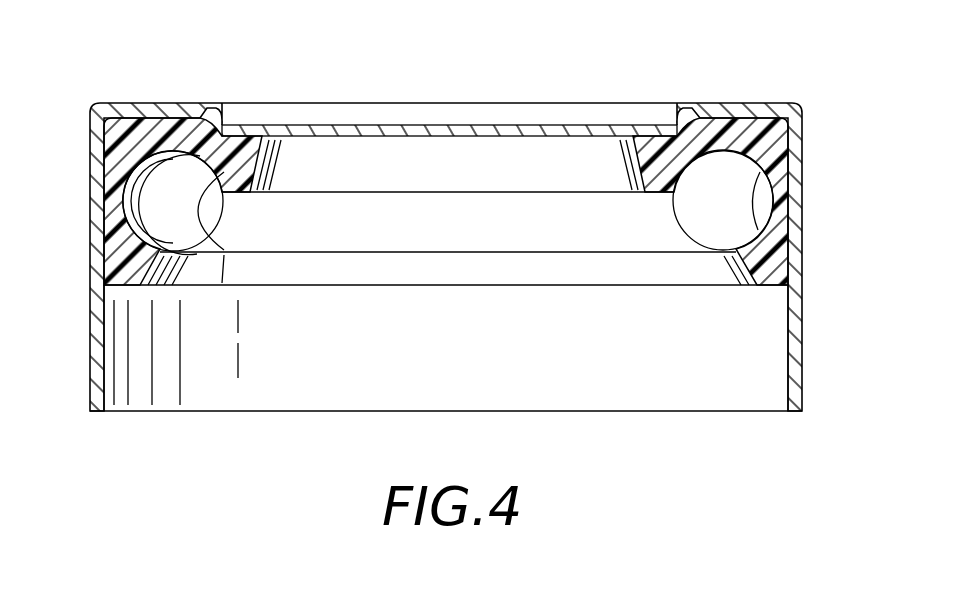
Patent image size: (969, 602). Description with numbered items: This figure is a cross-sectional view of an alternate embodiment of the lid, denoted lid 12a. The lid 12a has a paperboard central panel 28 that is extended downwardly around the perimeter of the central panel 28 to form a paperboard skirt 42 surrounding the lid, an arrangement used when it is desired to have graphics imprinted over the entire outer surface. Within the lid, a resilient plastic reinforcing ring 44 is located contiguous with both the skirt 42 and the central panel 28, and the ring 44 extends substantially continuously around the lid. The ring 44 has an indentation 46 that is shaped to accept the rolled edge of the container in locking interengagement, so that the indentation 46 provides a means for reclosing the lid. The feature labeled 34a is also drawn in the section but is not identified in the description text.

The lid 12a is at (798, 103).
The paperboard central panel 28 is at (433, 126).
The O-ring seal 34a is at (205, 192).
The paperboard skirt 42 is at (93, 366).
The resilient plastic reinforcing ring 44 is at (122, 285).
The indentation 46 is at (142, 207).